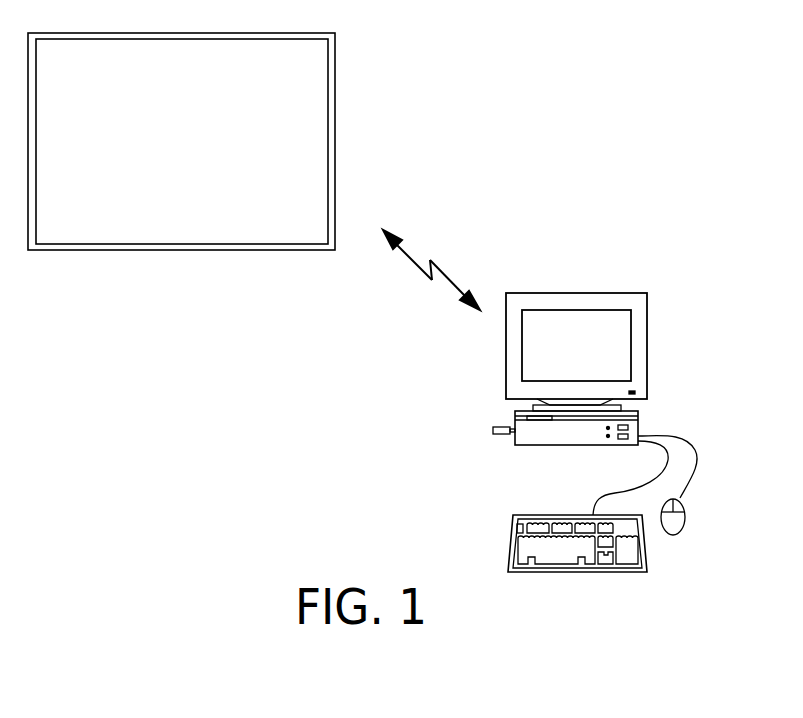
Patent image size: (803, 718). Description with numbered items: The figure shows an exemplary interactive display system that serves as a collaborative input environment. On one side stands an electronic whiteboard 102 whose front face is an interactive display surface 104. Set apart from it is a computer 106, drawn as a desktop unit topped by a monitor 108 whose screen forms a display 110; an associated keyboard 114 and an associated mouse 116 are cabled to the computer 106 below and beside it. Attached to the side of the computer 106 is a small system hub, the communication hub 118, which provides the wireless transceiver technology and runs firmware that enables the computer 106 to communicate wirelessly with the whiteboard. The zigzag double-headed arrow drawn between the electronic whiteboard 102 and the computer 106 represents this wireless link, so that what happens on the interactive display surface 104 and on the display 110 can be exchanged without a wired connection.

The electronic whiteboard 102 is at (335, 78).
The interactive display surface 104 is at (200, 153).
The computer 106 is at (557, 445).
The monitor 108 is at (647, 343).
The display 110 is at (595, 357).
The keyboard 114 is at (513, 542).
The mouse 116 is at (685, 520).
The communication hub 118 is at (500, 426).